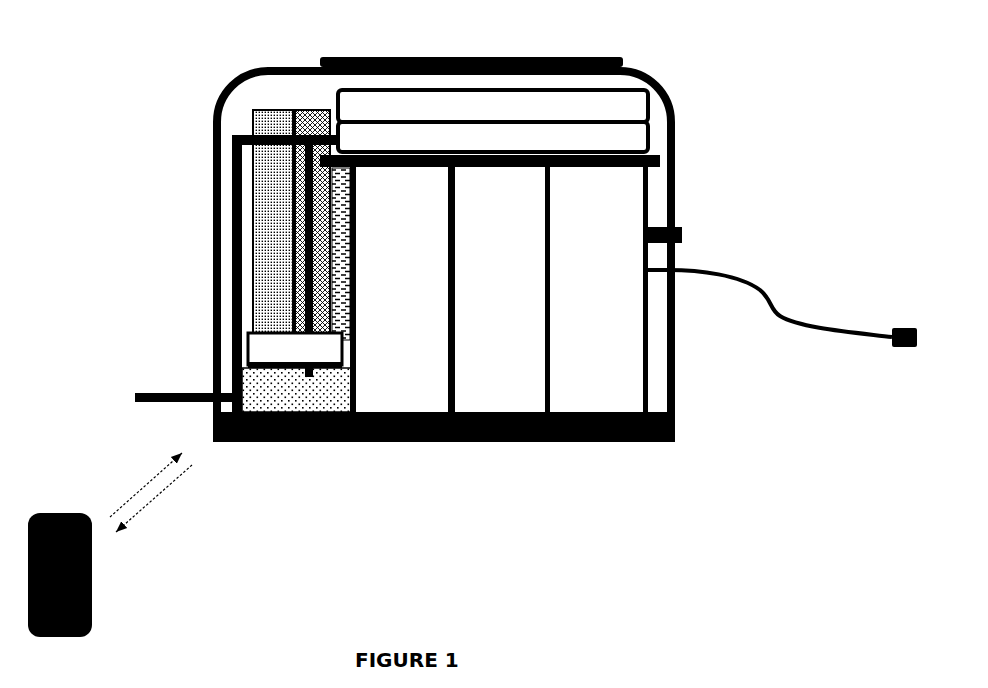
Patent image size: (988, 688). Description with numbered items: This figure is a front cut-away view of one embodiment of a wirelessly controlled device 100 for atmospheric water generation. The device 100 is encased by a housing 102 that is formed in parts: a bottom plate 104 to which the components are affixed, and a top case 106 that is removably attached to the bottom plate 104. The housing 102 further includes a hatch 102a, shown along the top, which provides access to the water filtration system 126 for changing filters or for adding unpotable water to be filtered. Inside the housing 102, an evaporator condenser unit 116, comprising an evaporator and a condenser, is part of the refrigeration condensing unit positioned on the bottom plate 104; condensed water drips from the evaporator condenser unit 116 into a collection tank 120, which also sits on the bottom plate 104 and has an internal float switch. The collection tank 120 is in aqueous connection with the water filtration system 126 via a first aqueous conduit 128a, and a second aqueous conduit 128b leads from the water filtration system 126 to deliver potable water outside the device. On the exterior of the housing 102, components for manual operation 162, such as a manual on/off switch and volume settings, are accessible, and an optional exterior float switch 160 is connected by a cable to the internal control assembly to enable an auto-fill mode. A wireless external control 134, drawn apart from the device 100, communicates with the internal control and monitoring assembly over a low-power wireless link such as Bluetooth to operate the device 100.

The wirelessly controlled device 100 is at (508, 289).
The housing 102 is at (678, 193).
The hatch 102a is at (571, 55).
The bottom plate 104 is at (543, 445).
The top case 106 is at (678, 383).
The evaporator condenser unit 116 is at (268, 198).
The collection tank 120 is at (307, 398).
The water filtration system 126 is at (631, 140).
The first aqueous conduit 128a is at (301, 321).
The second aqueous conduit 128b is at (235, 280).
The wireless external control 134 is at (95, 588).
The exterior float switch 160 is at (854, 328).
The components for manual operation 162 is at (698, 235).